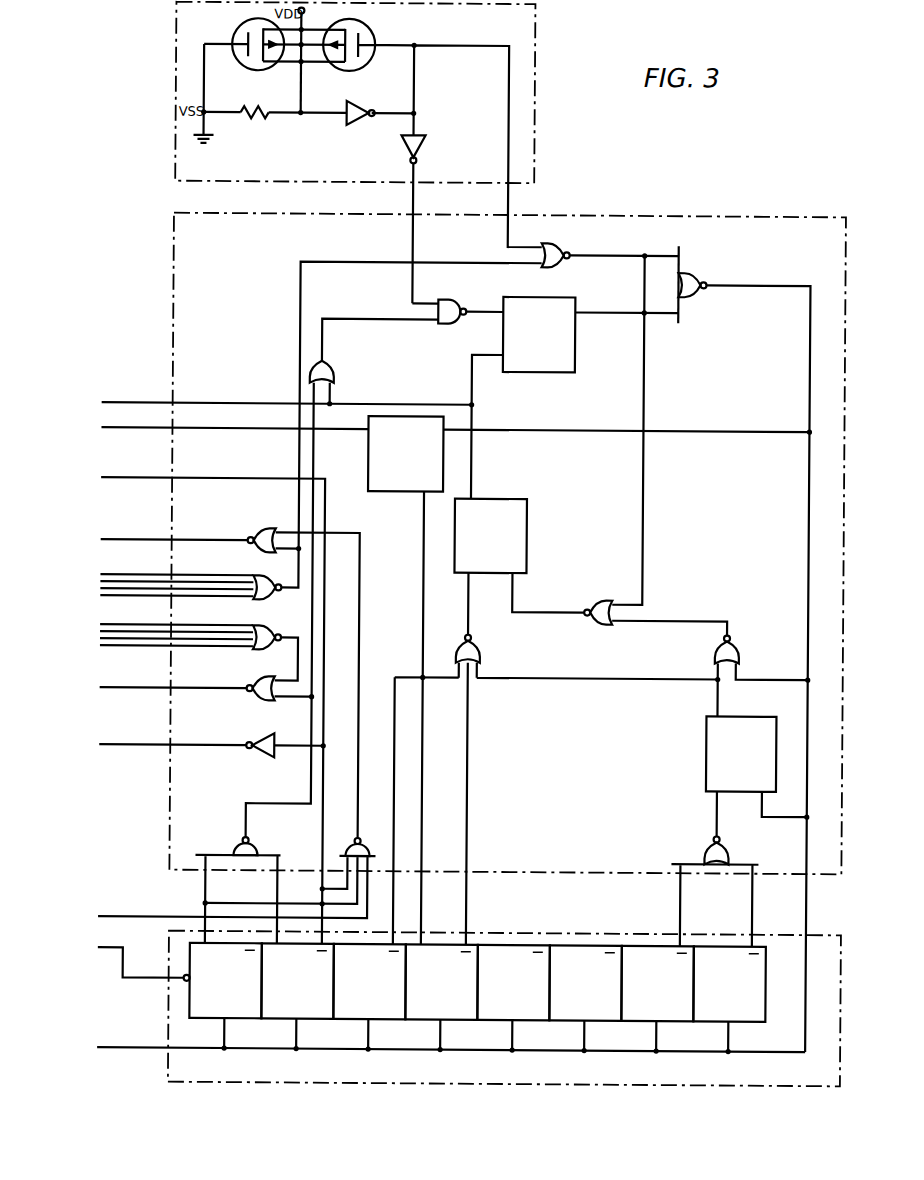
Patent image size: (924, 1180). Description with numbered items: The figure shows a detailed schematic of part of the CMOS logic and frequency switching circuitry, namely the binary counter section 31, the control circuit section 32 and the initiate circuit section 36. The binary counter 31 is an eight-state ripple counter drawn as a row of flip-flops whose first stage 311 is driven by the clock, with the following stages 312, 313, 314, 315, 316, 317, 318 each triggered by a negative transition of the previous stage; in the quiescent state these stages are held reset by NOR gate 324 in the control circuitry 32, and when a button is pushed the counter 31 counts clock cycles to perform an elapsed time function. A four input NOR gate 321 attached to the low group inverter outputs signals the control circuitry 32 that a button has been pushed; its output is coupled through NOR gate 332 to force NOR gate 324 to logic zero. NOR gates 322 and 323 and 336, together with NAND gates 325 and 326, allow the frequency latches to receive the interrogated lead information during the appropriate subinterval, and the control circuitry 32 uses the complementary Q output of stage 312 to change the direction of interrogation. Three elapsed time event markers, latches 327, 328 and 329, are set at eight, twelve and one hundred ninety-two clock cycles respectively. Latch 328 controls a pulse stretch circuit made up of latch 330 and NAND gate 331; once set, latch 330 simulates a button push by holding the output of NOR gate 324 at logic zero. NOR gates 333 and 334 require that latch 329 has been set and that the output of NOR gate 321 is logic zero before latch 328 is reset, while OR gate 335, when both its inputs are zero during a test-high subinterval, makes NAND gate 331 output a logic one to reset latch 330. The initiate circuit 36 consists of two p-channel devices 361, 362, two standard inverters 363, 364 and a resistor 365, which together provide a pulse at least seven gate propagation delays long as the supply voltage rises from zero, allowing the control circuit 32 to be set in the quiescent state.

The binary counter section 31 is at (496, 1066).
The control circuit section 32 is at (732, 215).
The initiate circuit section 36 is at (531, 30).
The first stage 311 is at (206, 1021).
The counter stage 312 is at (278, 1021).
The counter stage 313 is at (350, 1021).
The counter stage 314 is at (422, 1021).
The counter stage 315 is at (494, 1021).
The counter stage 316 is at (566, 1021).
The counter stage 317 is at (638, 1021).
The counter stage 318 is at (710, 1021).
The four input NOR gate 321 is at (272, 579).
The NOR gate 322 is at (261, 531).
The NOR gate 323 is at (256, 680).
The NOR gate 324 is at (698, 284).
The NAND gate 325 is at (231, 840).
The NAND gate 326 is at (366, 841).
The latch 327 is at (394, 478).
The latch 328 is at (520, 531).
The latch 329 is at (708, 754).
The latch 330 is at (551, 366).
The NAND gate 331 is at (453, 303).
The NOR gate 332 is at (561, 249).
The NOR gate 333 is at (599, 605).
The NOR gate 334 is at (741, 650).
The OR gate 335 is at (336, 370).
The NOR gate 336 is at (271, 630).
The p-channel device 361 is at (244, 44).
The p-channel device 362 is at (368, 45).
The inverter 363 is at (365, 106).
The inverter 364 is at (428, 149).
The resistor 365 is at (254, 102).